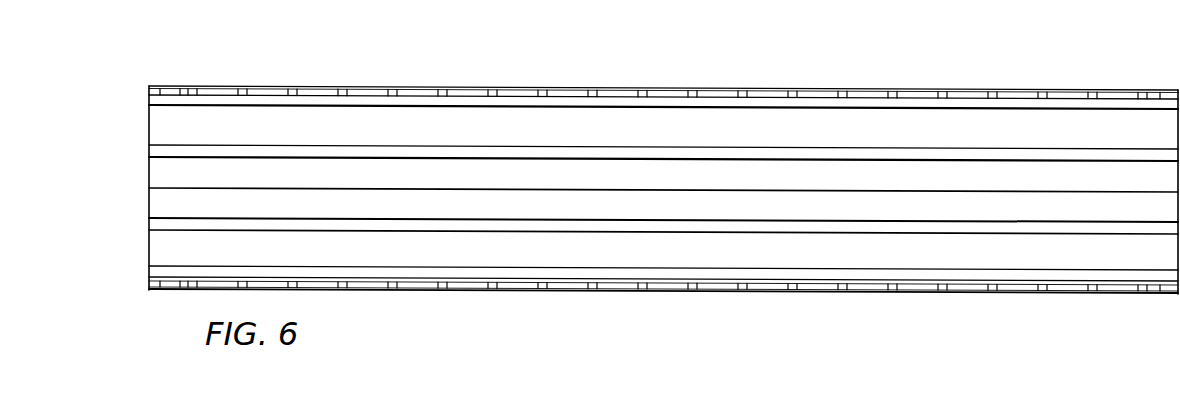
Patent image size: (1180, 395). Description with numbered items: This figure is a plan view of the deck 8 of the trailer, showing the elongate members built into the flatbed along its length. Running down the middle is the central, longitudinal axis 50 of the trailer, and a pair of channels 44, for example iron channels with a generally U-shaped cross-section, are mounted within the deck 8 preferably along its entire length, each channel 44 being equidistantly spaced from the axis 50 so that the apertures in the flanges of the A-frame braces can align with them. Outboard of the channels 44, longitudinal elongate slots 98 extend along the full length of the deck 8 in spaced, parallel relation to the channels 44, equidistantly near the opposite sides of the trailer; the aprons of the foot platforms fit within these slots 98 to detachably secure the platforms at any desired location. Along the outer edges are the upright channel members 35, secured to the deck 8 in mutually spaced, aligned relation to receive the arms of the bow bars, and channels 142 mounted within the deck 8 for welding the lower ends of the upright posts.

The deck 8 is at (505, 132).
The upright channel members 35 is at (392, 88).
The channels 142 is at (153, 91).
The longitudinal elongate slots 98 is at (150, 97).
The channels 44 is at (155, 150).
The central longitudinal axis 50 is at (170, 188).